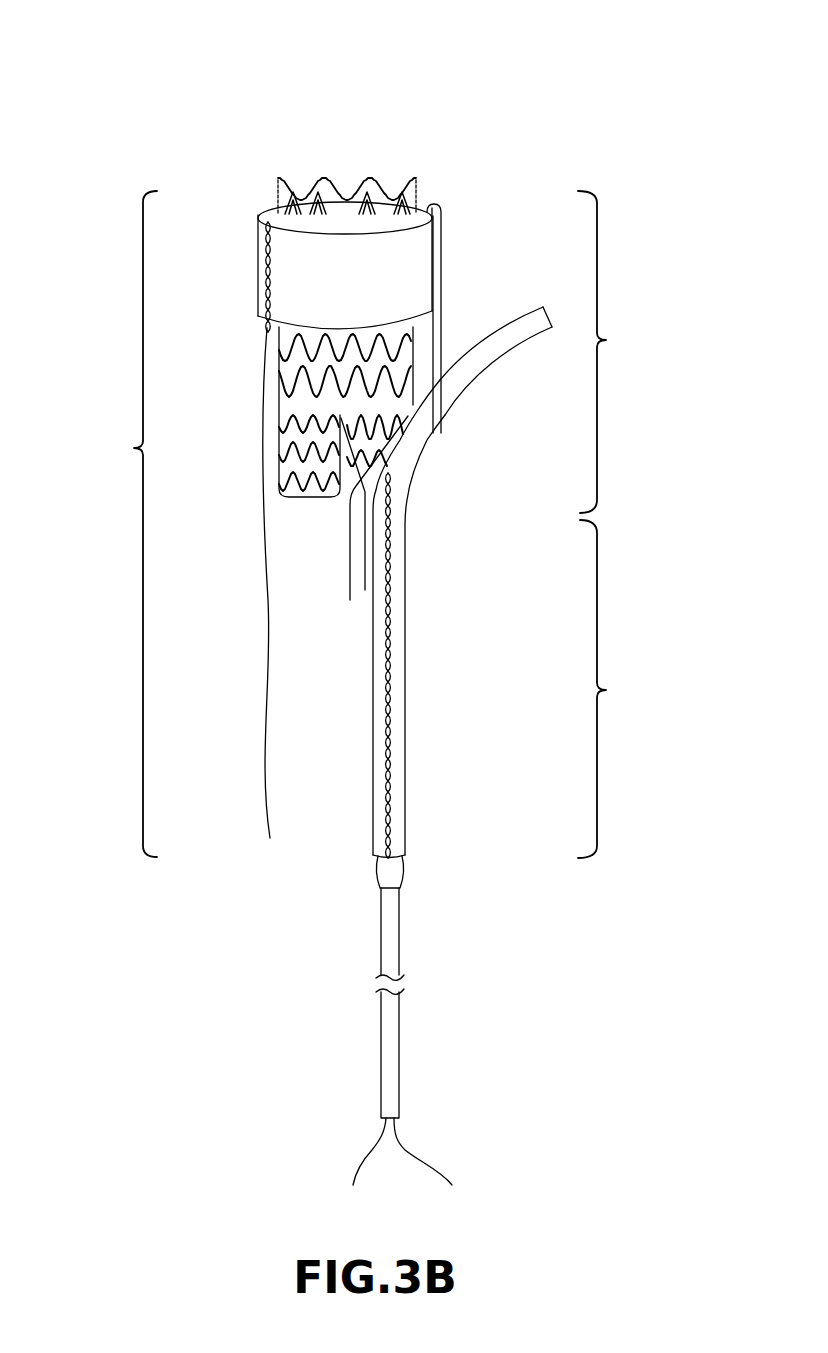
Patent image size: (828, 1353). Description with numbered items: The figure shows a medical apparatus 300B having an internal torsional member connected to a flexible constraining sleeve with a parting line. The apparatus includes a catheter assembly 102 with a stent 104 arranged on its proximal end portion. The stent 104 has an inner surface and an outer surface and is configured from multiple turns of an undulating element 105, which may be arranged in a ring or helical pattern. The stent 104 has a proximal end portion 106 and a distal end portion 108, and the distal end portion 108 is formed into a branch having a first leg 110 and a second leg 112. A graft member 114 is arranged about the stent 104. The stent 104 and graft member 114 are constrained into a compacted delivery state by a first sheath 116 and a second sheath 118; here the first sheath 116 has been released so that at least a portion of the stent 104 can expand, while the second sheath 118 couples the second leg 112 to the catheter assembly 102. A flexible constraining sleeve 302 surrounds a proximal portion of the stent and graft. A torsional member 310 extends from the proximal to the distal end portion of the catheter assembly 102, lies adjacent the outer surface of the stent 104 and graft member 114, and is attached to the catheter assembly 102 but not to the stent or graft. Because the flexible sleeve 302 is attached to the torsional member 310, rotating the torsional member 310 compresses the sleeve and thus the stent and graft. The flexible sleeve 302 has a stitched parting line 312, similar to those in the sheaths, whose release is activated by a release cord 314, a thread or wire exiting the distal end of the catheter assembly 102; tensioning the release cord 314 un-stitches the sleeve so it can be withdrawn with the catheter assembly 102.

The medical apparatus 300B is at (492, 70).
The catheter assembly 102 is at (401, 940).
The stent 104 is at (120, 524).
The undulating element 105 is at (365, 590).
The proximal end portion 106 is at (617, 352).
The distal end portion 108 is at (617, 689).
The first leg 110 is at (322, 503).
The second leg 112 is at (373, 784).
The graft member 114 is at (350, 550).
The first sheath 116 is at (462, 388).
The second sheath 118 is at (405, 693).
The flexible constraining sleeve 302 is at (258, 245).
The torsional member 310 is at (442, 257).
The parting line 312 is at (258, 287).
The release cord 314 is at (269, 617).